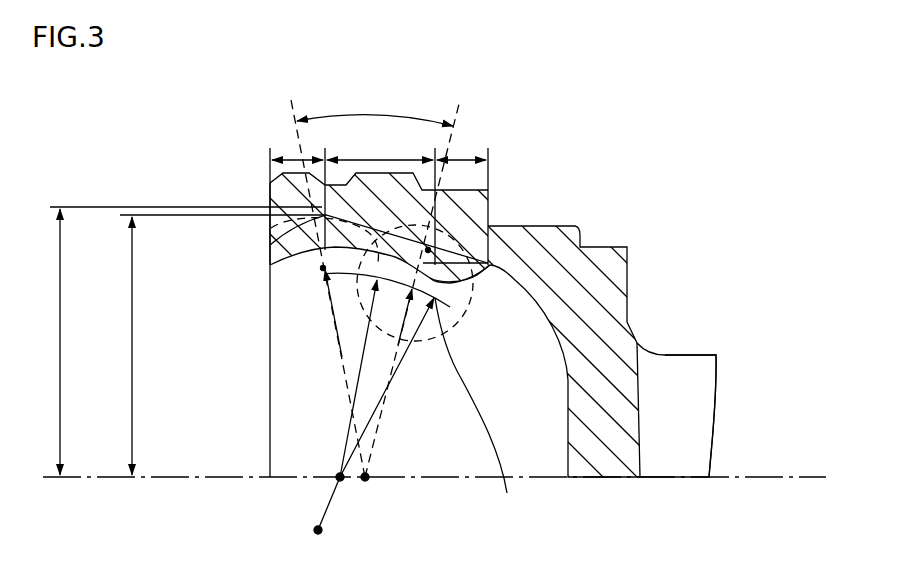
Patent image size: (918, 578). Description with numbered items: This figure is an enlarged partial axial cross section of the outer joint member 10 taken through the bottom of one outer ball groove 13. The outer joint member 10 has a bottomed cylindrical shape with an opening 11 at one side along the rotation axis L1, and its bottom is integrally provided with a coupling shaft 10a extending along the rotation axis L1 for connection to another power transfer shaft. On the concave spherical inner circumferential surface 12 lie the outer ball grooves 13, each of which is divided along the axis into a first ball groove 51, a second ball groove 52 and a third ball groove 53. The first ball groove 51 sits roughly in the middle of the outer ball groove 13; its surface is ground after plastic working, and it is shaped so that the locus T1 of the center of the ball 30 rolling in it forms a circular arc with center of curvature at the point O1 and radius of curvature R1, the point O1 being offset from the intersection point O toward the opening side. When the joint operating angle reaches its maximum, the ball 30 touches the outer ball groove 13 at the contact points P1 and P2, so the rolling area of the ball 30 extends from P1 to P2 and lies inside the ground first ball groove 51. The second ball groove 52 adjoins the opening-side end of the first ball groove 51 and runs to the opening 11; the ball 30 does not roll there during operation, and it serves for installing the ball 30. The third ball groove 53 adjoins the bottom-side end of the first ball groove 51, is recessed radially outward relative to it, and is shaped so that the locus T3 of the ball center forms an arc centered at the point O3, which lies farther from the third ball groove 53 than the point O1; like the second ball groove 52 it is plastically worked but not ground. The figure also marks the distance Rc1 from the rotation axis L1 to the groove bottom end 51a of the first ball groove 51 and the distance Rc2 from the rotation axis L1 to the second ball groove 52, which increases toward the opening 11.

The outer joint member 10 is at (703, 272).
The coupling shaft 10a is at (687, 380).
The opening 11 is at (268, 198).
The inner circumferential surface 12 is at (490, 266).
The outer ball groove 13 is at (270, 265).
The ball 30 is at (338, 282).
The first ball groove 51 is at (378, 160).
The groove bottom end 51a is at (270, 245).
The second ball groove 52 is at (297, 158).
The third ball groove 53 is at (465, 160).
The intersection point O is at (367, 481).
The center of curvature of first ball groove O1 is at (339, 478).
The center of curvature of third ball groove O3 is at (316, 530).
The contact point P1 is at (321, 270).
The contact point P2 is at (430, 250).
The radius of curvature R1 is at (388, 386).
The distance from rotation axis to groove bottom end Rc1 is at (206, 345).
The distance from connecting line to rotation axis Rc2 is at (168, 341).
The locus of ball center in first ball groove T1 is at (337, 276).
The locus of ball center in third ball groove T3 is at (478, 410).
The rotation axis L1 is at (772, 478).